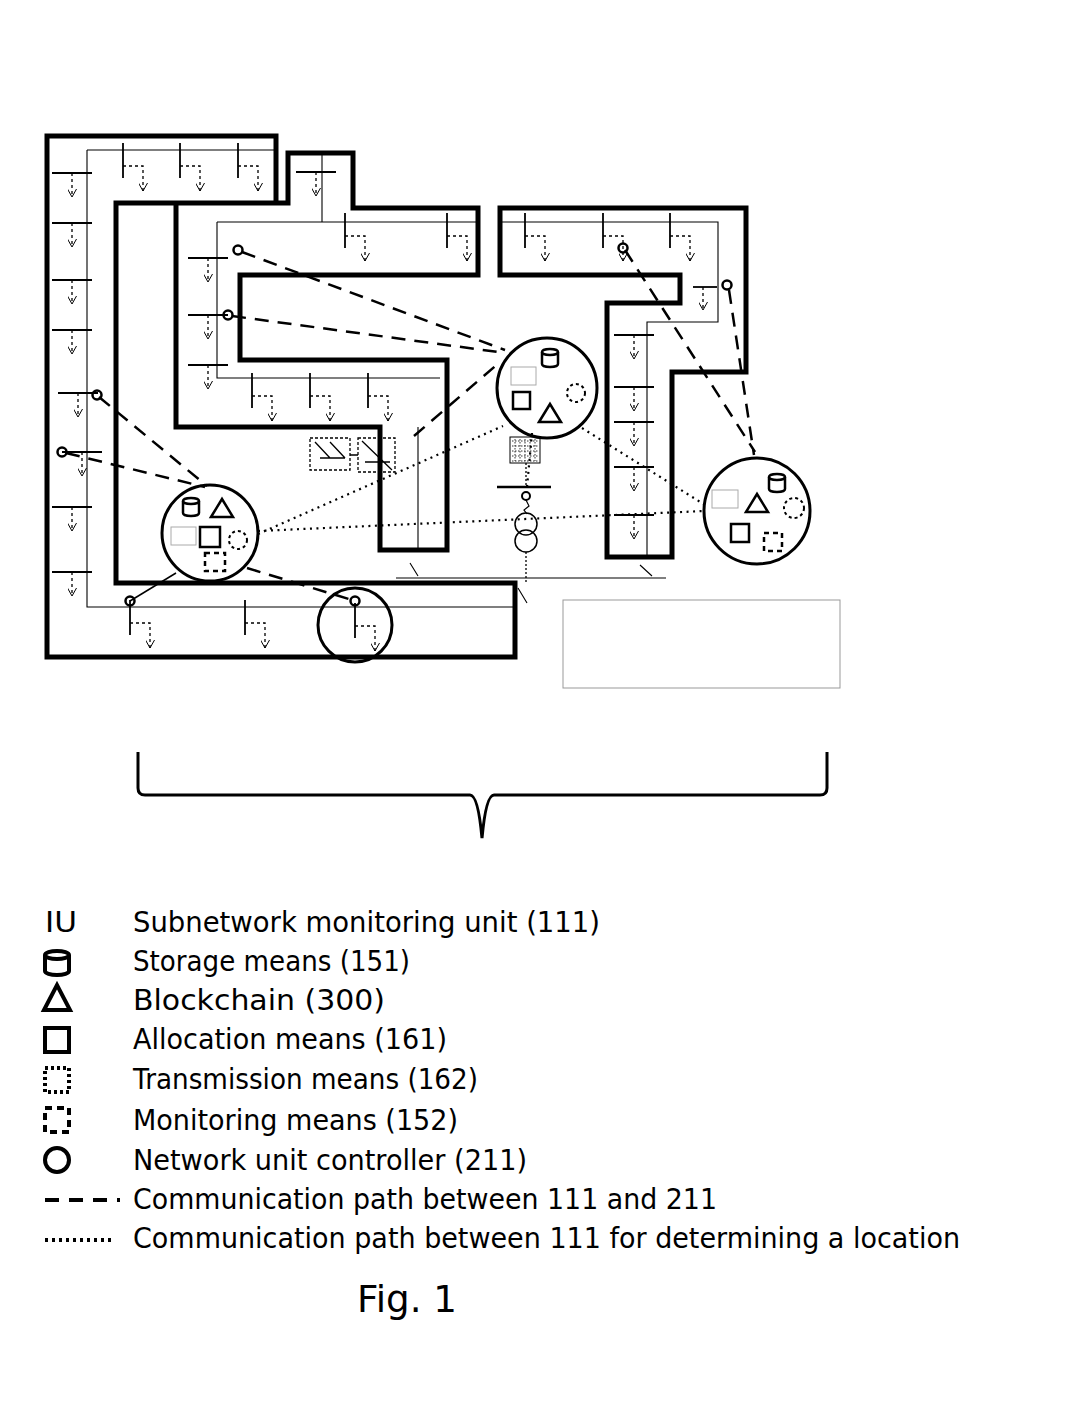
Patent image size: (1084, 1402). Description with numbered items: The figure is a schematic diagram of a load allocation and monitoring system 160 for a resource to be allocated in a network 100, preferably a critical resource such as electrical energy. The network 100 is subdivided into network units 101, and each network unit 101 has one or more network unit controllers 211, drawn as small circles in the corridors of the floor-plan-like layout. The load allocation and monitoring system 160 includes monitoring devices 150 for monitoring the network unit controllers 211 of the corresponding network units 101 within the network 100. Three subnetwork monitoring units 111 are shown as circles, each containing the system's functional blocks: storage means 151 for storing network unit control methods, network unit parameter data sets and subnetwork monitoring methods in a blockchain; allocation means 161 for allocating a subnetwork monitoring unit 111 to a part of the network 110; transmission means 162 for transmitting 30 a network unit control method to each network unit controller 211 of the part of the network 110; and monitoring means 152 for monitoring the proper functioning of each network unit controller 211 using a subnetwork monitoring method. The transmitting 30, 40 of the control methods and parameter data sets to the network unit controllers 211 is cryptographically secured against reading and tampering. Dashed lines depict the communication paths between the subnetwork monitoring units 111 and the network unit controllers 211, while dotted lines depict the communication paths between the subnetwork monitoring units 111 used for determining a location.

The network 100 is at (416, 103).
The network unit 101 is at (353, 670).
The part of the network 110 is at (514, 646).
The subnetwork monitoring unit 111 is at (260, 525).
The monitoring device 150 is at (554, 328).
The storage means 151 is at (775, 464).
The monitoring means 152 is at (213, 582).
The load allocation and monitoring system 160 is at (482, 814).
The allocation means 161 is at (742, 550).
The transmission means 162 is at (797, 523).
The network unit controller 211 is at (727, 273).
The transmitting a network unit control method 30 is at (305, 601).
The transmitting a network unit parameter data set 40 is at (321, 660).